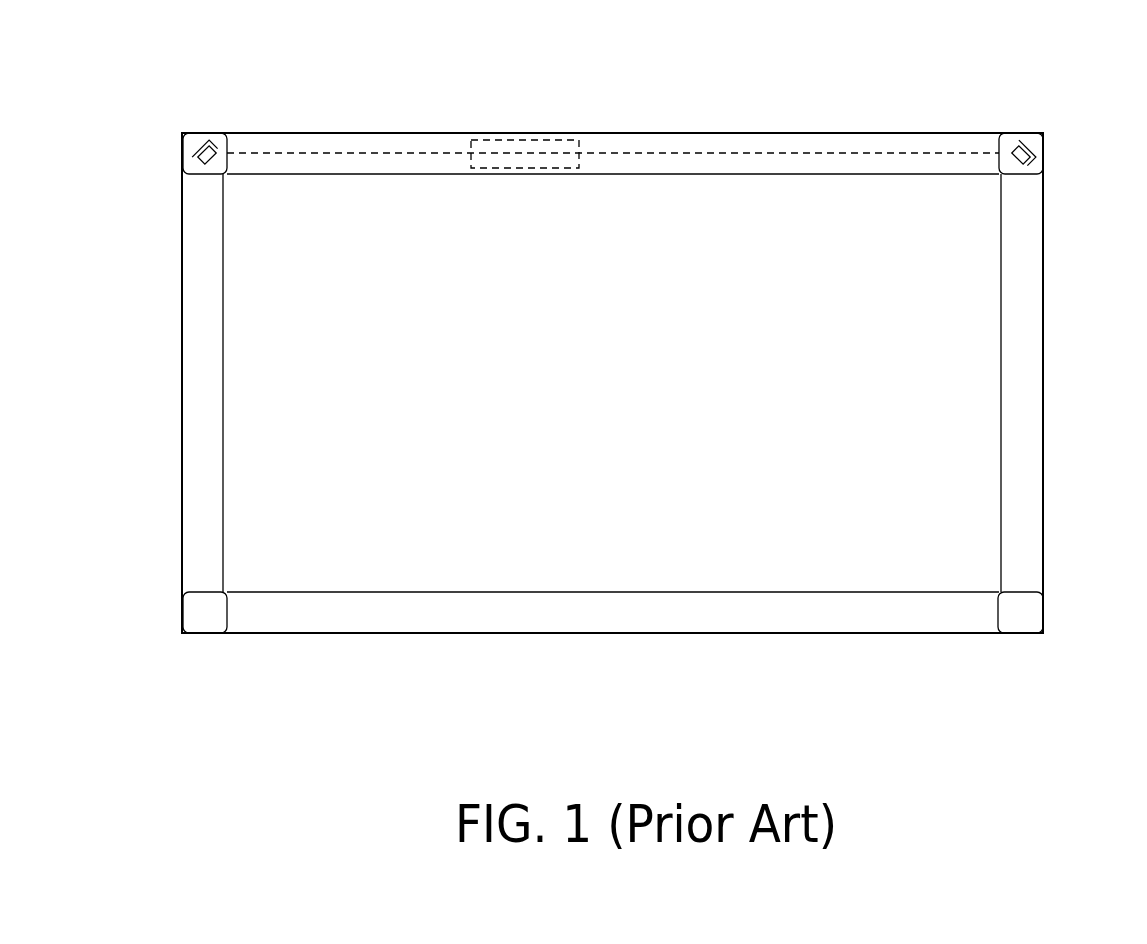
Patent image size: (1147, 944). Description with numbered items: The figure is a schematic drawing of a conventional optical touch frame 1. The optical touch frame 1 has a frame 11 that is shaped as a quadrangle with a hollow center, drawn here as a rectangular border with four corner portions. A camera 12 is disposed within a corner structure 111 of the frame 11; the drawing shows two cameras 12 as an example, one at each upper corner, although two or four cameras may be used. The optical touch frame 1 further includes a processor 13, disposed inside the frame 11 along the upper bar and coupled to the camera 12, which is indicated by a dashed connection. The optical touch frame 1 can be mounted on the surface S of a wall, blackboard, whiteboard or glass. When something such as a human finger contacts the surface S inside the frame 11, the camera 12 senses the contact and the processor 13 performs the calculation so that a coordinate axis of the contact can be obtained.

The optical touch frame 1 is at (128, 124).
The frame 11 is at (210, 277).
The corner structure 111 is at (1024, 138).
The camera 12 is at (1028, 150).
The processor 13 is at (522, 155).
The surface S is at (244, 385).